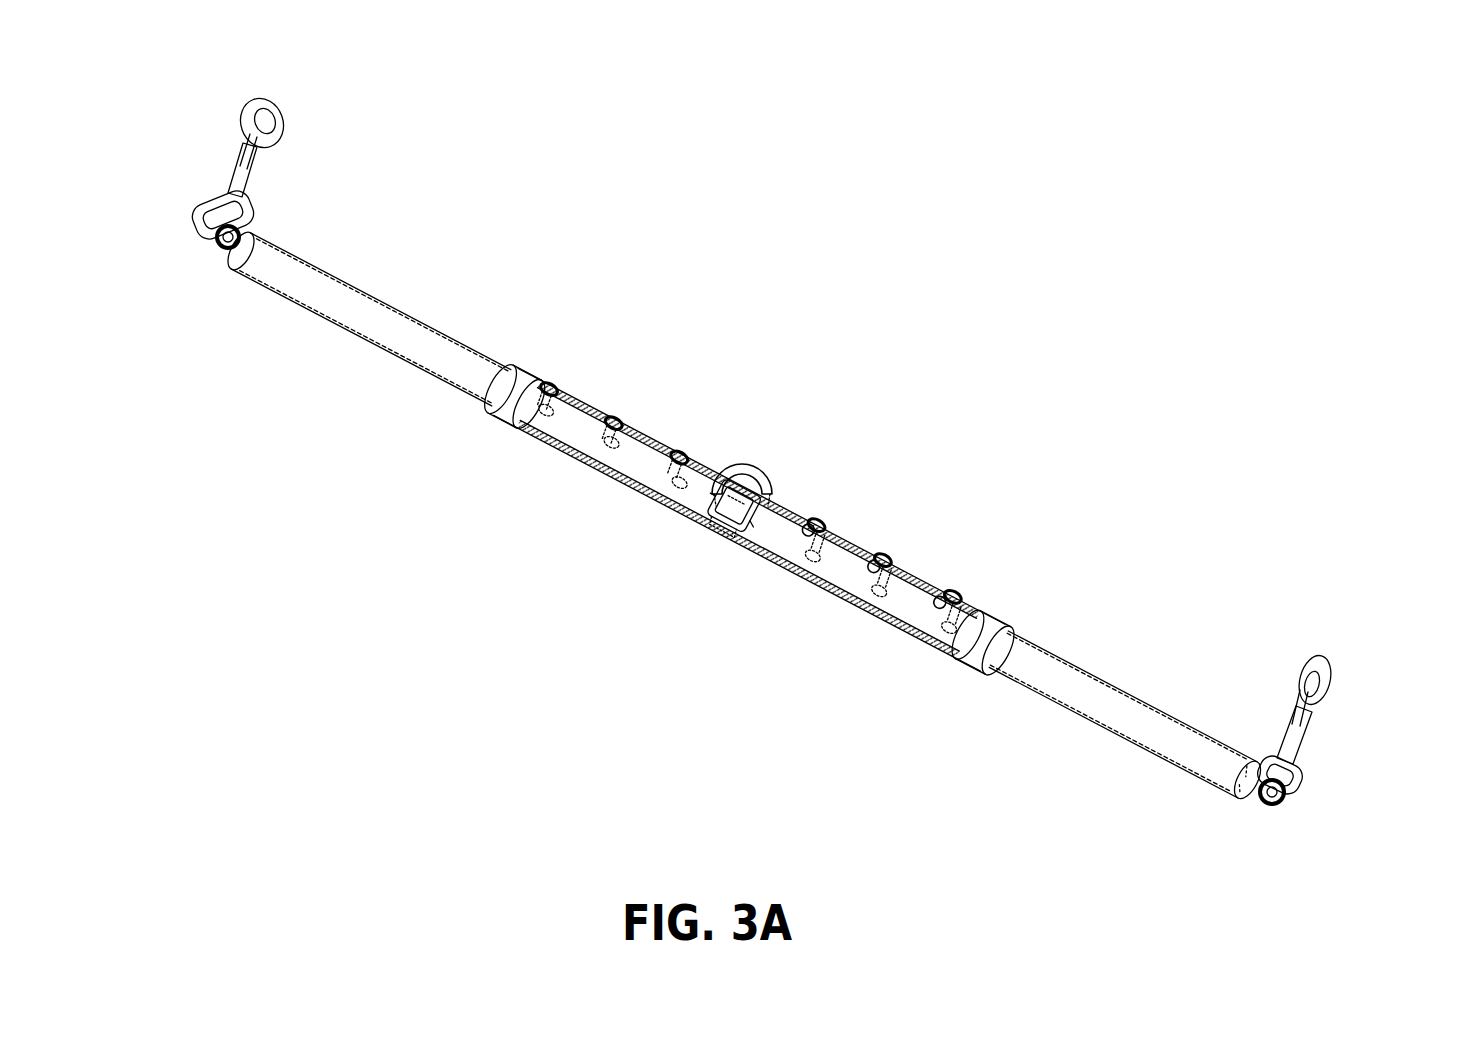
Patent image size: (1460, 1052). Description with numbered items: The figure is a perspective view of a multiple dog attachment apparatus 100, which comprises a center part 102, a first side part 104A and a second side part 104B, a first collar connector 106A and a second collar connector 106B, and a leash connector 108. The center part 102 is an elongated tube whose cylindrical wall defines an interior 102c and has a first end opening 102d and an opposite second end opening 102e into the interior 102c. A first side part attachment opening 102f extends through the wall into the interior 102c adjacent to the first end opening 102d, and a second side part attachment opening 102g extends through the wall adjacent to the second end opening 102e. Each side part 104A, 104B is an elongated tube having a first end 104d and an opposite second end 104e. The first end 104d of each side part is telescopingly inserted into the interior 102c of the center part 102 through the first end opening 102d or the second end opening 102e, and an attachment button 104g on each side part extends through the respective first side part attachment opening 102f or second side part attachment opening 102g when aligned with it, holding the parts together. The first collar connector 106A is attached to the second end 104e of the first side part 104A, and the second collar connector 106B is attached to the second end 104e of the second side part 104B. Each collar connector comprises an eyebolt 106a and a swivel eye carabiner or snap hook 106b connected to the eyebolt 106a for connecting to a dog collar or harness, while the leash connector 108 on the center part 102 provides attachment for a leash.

The multiple dog attachment apparatus 100 is at (838, 244).
The center part 102 is at (764, 412).
The interior 102c is at (740, 515).
The first end opening 102d is at (482, 418).
The second end opening 102e is at (962, 673).
The first side part attachment opening 102f is at (680, 483).
The second side part attachment opening 102g is at (940, 603).
The first side part 104A is at (730, 526).
The second side part 104B is at (1120, 645).
The first end 104d is at (700, 503).
The second end 104e is at (228, 284).
The attachment button 104g is at (548, 392).
The first collar connector 106A is at (220, 78).
The second collar connector 106B is at (1340, 633).
The eyebolt 106a is at (196, 253).
The swivel eye carabiner or snap hook 106b is at (203, 138).
The leash connector 108 is at (770, 461).